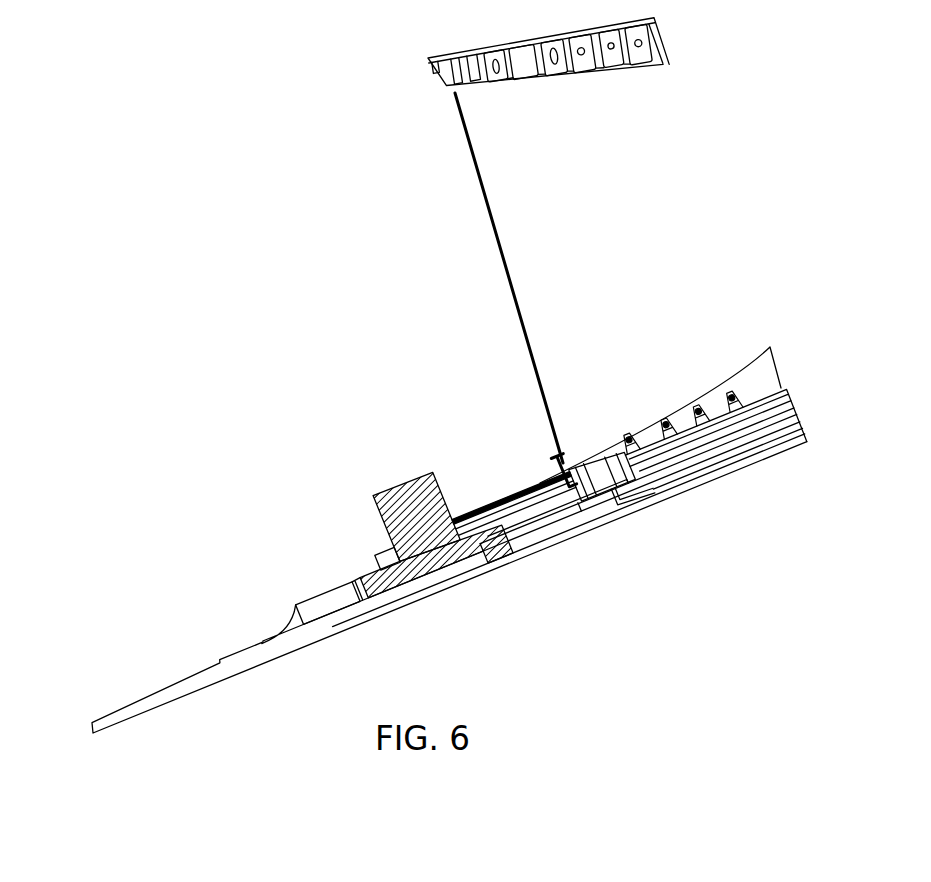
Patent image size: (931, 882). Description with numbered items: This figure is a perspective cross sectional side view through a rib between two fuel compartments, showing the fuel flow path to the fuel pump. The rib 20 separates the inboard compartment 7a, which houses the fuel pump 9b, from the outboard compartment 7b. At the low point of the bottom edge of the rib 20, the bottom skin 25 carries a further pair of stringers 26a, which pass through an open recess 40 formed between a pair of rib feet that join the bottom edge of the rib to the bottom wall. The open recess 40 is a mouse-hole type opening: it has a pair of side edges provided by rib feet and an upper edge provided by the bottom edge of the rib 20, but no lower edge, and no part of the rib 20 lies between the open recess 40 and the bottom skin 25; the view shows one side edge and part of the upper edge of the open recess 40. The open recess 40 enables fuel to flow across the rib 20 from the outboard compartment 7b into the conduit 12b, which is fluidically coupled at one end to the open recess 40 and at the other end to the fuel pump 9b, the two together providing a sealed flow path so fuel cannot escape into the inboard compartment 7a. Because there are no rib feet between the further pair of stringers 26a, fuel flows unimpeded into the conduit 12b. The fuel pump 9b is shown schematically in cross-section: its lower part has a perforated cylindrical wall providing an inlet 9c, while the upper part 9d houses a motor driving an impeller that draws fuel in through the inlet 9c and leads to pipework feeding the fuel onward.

The inboard compartment 7a is at (391, 295).
The outboard compartment 7b is at (726, 199).
The fuel pump 9b is at (421, 526).
The inlet 9c is at (502, 544).
The upper part of the fuel pump 9d is at (434, 474).
The conduit 12b is at (527, 520).
The rib 20 is at (478, 150).
The bottom skin 25 is at (313, 650).
The further pair of stringers 26a is at (313, 596).
The open recess 40 is at (592, 502).